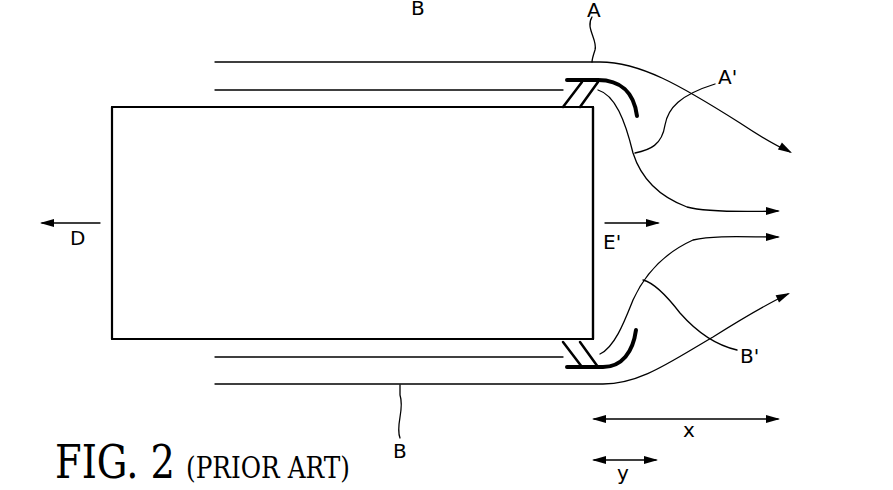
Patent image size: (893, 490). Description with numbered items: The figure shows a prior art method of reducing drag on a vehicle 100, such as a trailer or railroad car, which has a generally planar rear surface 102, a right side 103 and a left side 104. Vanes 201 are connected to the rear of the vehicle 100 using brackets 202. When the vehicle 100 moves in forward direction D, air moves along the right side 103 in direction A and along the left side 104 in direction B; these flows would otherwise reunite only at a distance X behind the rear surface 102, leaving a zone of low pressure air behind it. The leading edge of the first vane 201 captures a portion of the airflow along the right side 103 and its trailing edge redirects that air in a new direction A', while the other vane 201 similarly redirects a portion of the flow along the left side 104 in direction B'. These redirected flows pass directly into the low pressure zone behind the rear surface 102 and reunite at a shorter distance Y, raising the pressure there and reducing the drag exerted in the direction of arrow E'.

The vehicle 100 is at (100, 178).
The rear surface 102 is at (593, 173).
The right side 103 is at (152, 106).
The left side 104 is at (143, 340).
The vane 201 is at (633, 92).
The bracket 202 is at (563, 99).